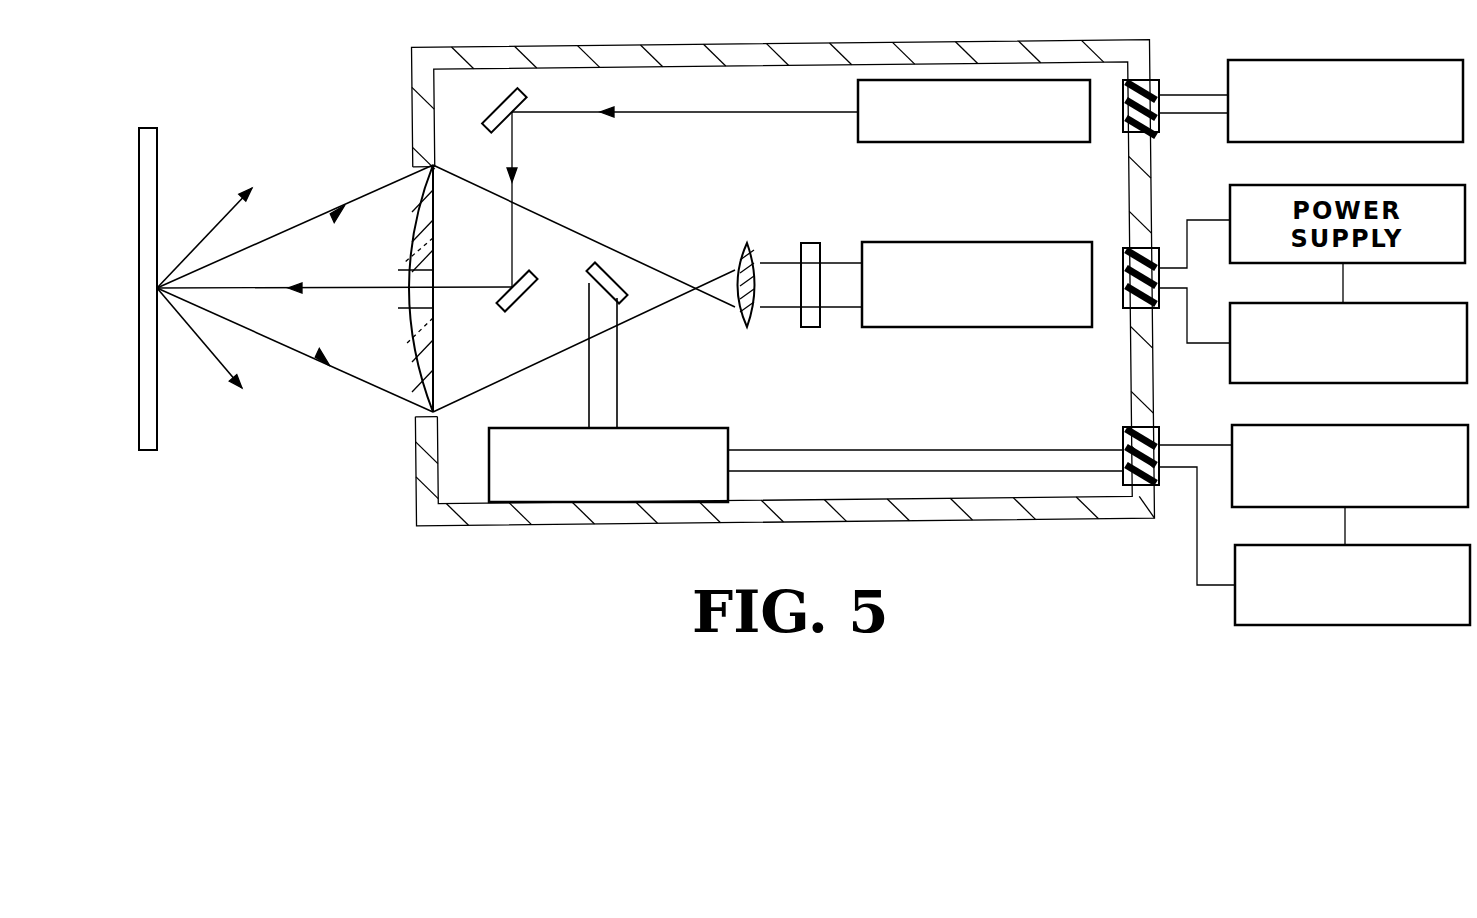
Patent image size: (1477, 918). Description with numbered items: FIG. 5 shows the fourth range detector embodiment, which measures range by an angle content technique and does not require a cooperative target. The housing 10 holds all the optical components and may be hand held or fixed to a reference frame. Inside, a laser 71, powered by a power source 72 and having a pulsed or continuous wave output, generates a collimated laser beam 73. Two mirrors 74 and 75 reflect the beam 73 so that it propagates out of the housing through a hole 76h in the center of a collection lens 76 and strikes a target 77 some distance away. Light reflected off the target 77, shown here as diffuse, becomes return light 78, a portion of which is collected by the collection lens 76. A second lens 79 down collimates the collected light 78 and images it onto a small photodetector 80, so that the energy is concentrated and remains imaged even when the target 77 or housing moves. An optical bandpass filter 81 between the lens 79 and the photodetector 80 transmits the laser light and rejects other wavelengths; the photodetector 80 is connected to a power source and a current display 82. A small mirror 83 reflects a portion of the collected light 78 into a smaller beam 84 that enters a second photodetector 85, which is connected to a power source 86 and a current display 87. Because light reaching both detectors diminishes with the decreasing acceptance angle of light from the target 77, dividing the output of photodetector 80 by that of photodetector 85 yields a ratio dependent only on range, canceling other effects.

The housing 10 is at (862, 45).
The laser 71 is at (858, 126).
The power source 72 is at (1330, 60).
The laser beam 73 is at (612, 115).
The mirror 74 is at (503, 98).
The mirror 75 is at (510, 312).
The collection lens 76 is at (412, 215).
The hole 76h is at (405, 300).
The target 77 is at (157, 178).
The reflected return light 78 is at (526, 372).
The second lens 79 is at (740, 252).
The photodetector 80 is at (938, 242).
The optical bandpass filter 81 is at (806, 243).
The current display 82 is at (1388, 303).
The small mirror 83 is at (598, 268).
The smaller beam 84 is at (603, 383).
The second photodetector 85 is at (695, 428).
The power source 86 is at (1368, 425).
The current display 87 is at (1232, 605).